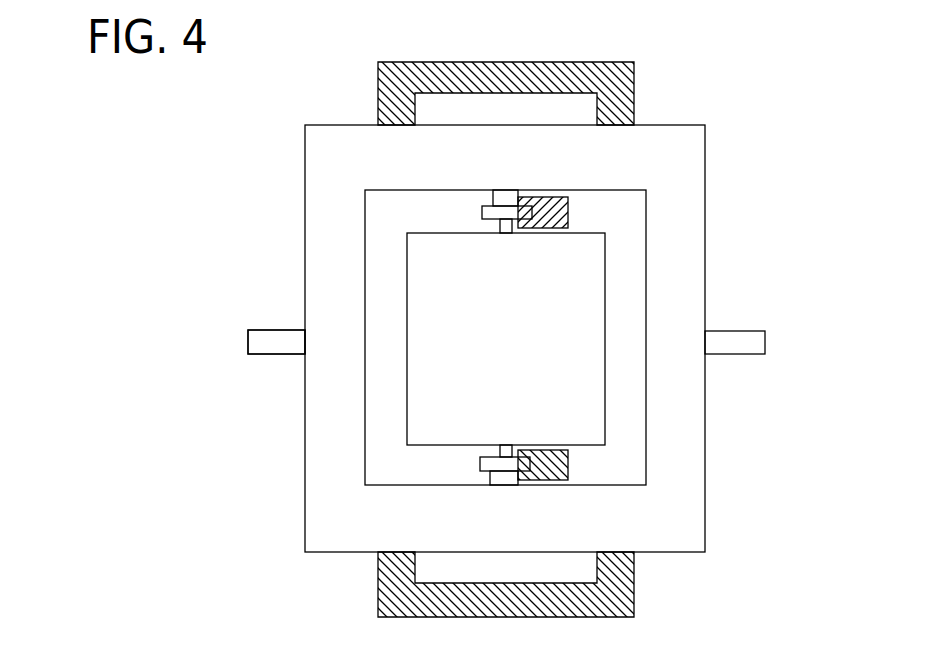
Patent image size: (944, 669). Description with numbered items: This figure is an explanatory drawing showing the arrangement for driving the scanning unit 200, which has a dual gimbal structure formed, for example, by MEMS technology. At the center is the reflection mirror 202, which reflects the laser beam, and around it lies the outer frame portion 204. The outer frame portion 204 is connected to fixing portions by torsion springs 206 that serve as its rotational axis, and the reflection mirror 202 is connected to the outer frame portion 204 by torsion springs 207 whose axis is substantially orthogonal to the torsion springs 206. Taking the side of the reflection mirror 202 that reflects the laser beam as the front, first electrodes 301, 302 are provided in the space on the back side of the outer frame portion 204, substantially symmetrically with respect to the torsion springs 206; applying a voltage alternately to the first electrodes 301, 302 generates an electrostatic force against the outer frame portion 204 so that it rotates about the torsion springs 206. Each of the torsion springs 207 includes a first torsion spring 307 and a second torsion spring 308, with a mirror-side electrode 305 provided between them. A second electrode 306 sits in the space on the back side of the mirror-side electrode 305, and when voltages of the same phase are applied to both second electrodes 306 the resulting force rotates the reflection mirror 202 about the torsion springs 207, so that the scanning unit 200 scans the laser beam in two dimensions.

The scanning unit 200 is at (717, 92).
The reflection mirror 202 is at (563, 293).
The outer frame portion 204 is at (698, 498).
The torsion spring 206 is at (270, 337).
The torsion spring 207 is at (215, 463).
The first electrode 301 is at (623, 585).
The first electrode 302 is at (591, 92).
The mirror-side electrode 305 is at (482, 211).
The second electrode 306 is at (568, 213).
The first torsion spring 307 is at (503, 478).
The second torsion spring 308 is at (497, 448).